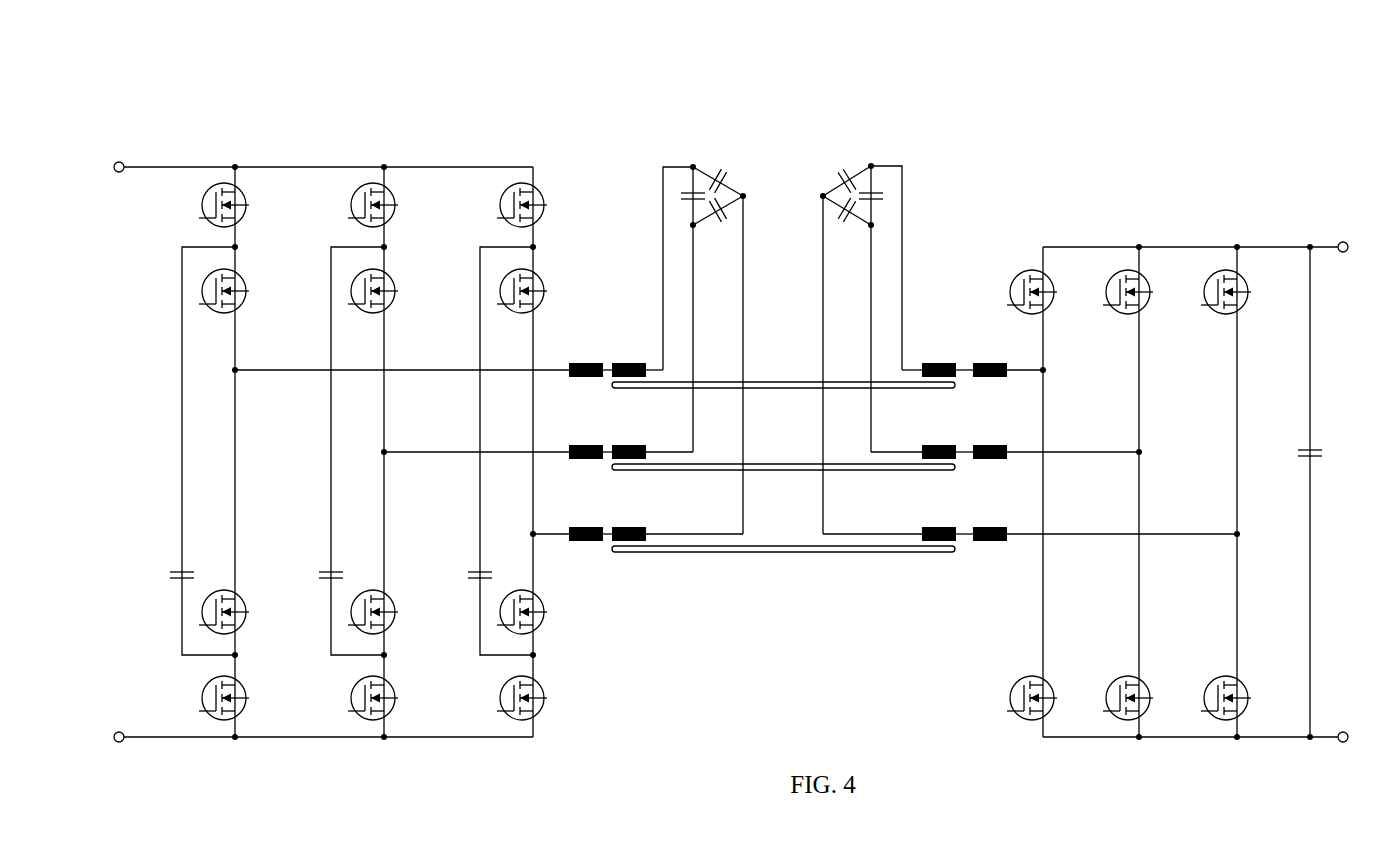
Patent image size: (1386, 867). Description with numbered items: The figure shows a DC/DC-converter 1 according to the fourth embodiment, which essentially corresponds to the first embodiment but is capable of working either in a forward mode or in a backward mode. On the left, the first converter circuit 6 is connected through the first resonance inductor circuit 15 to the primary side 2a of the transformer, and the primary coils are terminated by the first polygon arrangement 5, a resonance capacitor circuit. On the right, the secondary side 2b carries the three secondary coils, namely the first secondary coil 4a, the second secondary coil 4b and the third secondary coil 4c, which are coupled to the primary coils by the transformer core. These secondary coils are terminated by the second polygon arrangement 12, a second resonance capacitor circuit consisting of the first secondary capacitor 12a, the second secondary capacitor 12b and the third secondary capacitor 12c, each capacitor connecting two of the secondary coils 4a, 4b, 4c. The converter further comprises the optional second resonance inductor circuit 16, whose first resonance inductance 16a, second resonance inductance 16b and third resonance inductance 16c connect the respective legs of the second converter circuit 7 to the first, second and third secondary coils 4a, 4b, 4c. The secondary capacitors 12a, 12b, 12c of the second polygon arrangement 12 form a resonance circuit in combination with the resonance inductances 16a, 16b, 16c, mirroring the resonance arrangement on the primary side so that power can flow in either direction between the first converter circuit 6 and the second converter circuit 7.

The DC/DC-converter 1 is at (1298, 73).
The first converter circuit 6 is at (560, 146).
The first resonance inductor circuit 15 is at (565, 146).
The primary side 2a is at (608, 146).
The first polygon arrangement 5 is at (653, 146).
The second polygon arrangement 12 is at (799, 146).
The first secondary capacitor 12a is at (880, 182).
The second secondary capacitor 12b is at (886, 200).
The third secondary capacitor 12c is at (880, 214).
The secondary side 2b is at (918, 146).
The first secondary coil 4a is at (940, 362).
The second secondary coil 4b is at (940, 444).
The third secondary coil 4c is at (940, 526).
The second resonance inductor circuit 16 is at (967, 146).
The first resonance inductance 16a is at (992, 362).
The second resonance inductance 16b is at (992, 444).
The third resonance inductance 16c is at (992, 526).
The second converter circuit 7 is at (1337, 146).